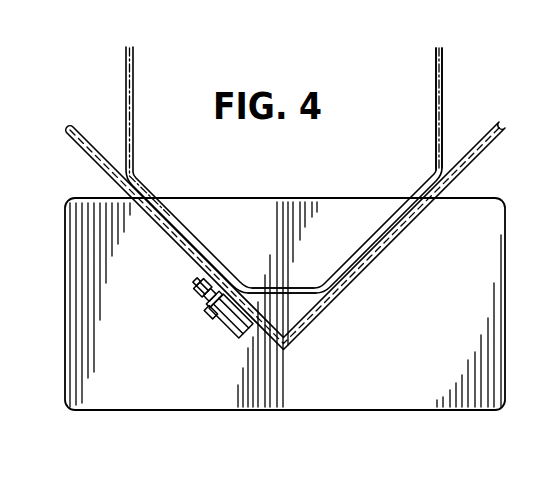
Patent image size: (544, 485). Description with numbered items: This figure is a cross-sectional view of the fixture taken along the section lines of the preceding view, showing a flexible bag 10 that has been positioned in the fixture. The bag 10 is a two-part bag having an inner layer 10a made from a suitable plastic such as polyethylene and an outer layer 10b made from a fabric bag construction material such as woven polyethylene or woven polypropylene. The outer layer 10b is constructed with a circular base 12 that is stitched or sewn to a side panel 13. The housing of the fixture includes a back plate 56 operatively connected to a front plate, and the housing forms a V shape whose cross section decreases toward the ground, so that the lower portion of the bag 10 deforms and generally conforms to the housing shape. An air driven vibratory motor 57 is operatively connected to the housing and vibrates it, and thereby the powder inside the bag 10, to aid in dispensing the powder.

The flexible bag 10 is at (237, 170).
The inner layer 10a is at (133, 123).
The outer layer 10b is at (125, 95).
The base 12 is at (338, 288).
The side panel 13 is at (443, 92).
The back plate 56 is at (85, 147).
The air driven vibratory motor 57 is at (210, 313).